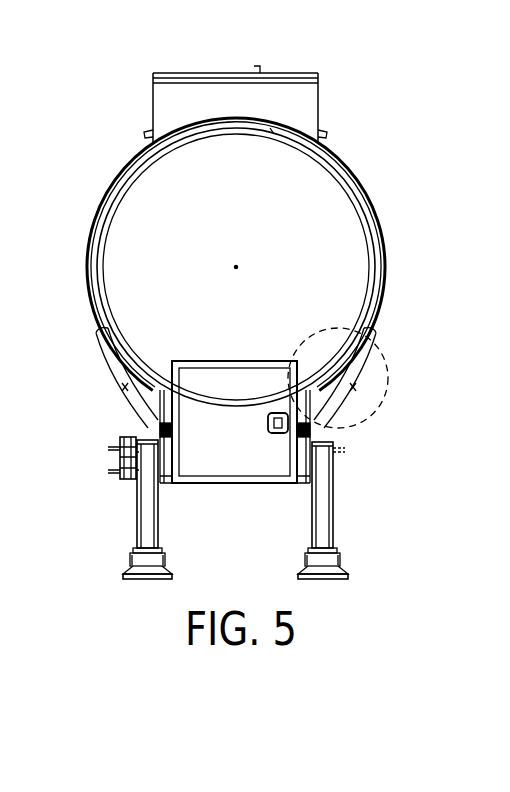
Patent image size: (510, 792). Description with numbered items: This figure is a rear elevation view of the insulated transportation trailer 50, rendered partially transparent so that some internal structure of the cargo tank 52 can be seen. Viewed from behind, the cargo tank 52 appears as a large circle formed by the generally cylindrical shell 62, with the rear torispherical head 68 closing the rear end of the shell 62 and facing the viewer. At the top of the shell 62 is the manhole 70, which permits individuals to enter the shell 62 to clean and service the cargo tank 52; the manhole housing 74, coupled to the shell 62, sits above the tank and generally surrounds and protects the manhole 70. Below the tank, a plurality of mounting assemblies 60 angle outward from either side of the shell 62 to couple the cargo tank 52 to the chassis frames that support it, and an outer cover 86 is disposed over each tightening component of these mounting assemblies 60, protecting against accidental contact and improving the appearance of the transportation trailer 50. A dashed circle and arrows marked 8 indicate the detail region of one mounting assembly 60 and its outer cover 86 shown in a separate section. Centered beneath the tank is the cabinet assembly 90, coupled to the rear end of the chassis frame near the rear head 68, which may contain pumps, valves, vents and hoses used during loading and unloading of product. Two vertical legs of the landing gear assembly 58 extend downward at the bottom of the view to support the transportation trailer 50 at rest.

The transportation trailer 50 is at (435, 106).
The cargo tank 52 is at (396, 250).
The landing gear assembly 58 is at (127, 522).
The mounting assemblies 60 is at (83, 362).
The shell 62 is at (338, 160).
The rear torispherical head 68 is at (196, 236).
The manhole 70 is at (271, 135).
The manhole housing 74 is at (331, 94).
The outer cover 86 is at (125, 386).
The cabinet assembly 90 is at (224, 492).
The section line 8 is at (385, 347).